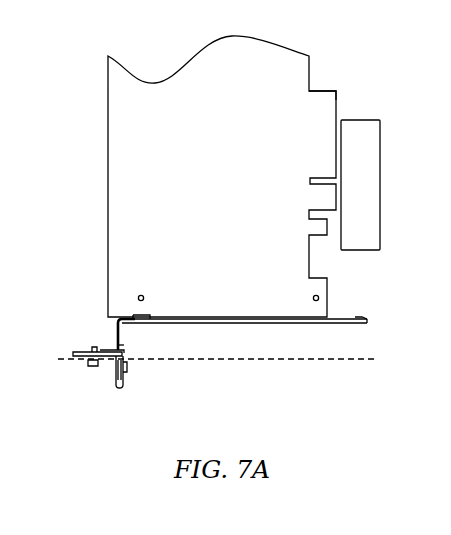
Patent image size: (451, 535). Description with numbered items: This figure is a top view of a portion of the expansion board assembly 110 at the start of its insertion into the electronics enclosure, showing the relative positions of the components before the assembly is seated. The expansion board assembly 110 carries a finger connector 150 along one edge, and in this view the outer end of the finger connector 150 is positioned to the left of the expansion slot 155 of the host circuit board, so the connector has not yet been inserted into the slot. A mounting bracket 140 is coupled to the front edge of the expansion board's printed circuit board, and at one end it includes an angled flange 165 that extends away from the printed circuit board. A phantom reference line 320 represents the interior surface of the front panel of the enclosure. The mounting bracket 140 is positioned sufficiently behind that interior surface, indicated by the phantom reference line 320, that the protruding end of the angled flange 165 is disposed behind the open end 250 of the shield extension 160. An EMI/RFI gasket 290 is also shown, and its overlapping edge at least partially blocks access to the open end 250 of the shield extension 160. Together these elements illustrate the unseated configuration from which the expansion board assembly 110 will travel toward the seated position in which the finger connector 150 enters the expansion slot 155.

The expansion board assembly 110 is at (172, 130).
The finger connector 150 is at (327, 91).
The expansion slot 155 is at (370, 120).
The mounting bracket 140 is at (348, 323).
The angled flange 165 is at (118, 342).
The EMI/RFI gasket 290 is at (103, 350).
The open end 250 is at (126, 345).
The shield extension 160 is at (115, 398).
The phantom reference line 320 is at (347, 362).